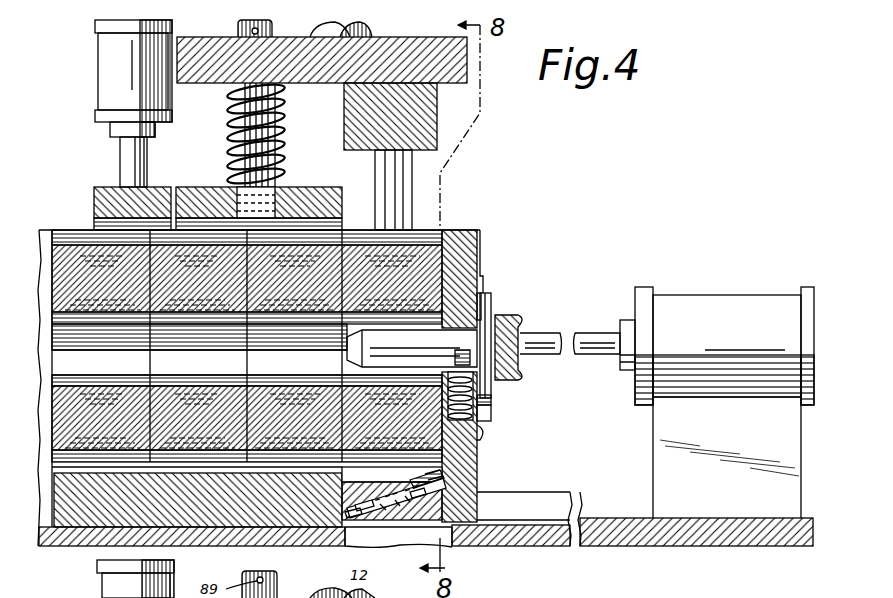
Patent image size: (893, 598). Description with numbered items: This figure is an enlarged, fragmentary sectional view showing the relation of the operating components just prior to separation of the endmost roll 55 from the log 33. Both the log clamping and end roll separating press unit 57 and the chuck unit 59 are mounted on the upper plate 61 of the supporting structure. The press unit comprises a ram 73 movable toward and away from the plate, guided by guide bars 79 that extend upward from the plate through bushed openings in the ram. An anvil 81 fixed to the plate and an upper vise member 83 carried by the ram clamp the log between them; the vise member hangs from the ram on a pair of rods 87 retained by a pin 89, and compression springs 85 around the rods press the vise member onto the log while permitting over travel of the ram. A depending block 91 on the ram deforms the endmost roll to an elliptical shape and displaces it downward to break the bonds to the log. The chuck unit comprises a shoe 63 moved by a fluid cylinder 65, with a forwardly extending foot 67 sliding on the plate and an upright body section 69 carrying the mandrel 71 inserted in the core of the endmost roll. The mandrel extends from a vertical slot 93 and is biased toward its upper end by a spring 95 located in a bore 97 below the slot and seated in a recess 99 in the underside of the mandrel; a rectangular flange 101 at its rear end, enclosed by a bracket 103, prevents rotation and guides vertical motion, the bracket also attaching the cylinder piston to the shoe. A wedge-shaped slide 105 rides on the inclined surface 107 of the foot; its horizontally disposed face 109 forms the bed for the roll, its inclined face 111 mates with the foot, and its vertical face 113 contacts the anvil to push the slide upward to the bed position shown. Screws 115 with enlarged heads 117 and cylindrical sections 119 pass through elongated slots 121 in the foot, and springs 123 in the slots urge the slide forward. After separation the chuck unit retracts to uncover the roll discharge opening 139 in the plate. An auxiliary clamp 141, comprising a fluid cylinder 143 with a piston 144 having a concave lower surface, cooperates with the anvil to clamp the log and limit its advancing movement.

The log 33 is at (259, 374).
The endmost roll 55 is at (425, 230).
The log clamping and end roll separating press unit 57 is at (325, 118).
The chuck unit 59 is at (519, 351).
The upper plate 61 is at (70, 545).
The shoe 63 is at (477, 260).
The fluid cylinder 65 is at (728, 302).
The foot 67 is at (478, 508).
The body section 69 is at (478, 456).
The mandrel 71 is at (412, 347).
The ram 73 is at (400, 40).
The guide bars 79 is at (395, 192).
The anvil 81 is at (205, 512).
The upper vise member 83 is at (315, 187).
The compression springs 85 is at (283, 152).
The rods 87 is at (243, 125).
The pin 89 is at (252, 31).
The depending block 91 is at (425, 114).
The slot 93 is at (447, 383).
The spring 95 is at (492, 402).
The bore 97 is at (486, 437).
The recess 99 is at (462, 358).
The flange 101 is at (492, 304).
The bracket 103 is at (492, 414).
The slide 105 is at (445, 474).
The inclined surface 107 is at (345, 512).
The horizontally disposed face 109 is at (360, 480).
The inclined face 111 is at (398, 506).
The vertical face 113 is at (340, 494).
The screws 115 is at (420, 498).
The head 117 is at (408, 502).
The cylindrical section 119 is at (445, 482).
The slots 121 is at (383, 510).
The springs 123 is at (520, 470).
The roll discharge opening 139 is at (445, 552).
The auxiliary clamp 141 is at (100, 132).
The fluid cylinder 143 is at (117, 62).
The piston 144 is at (130, 155).